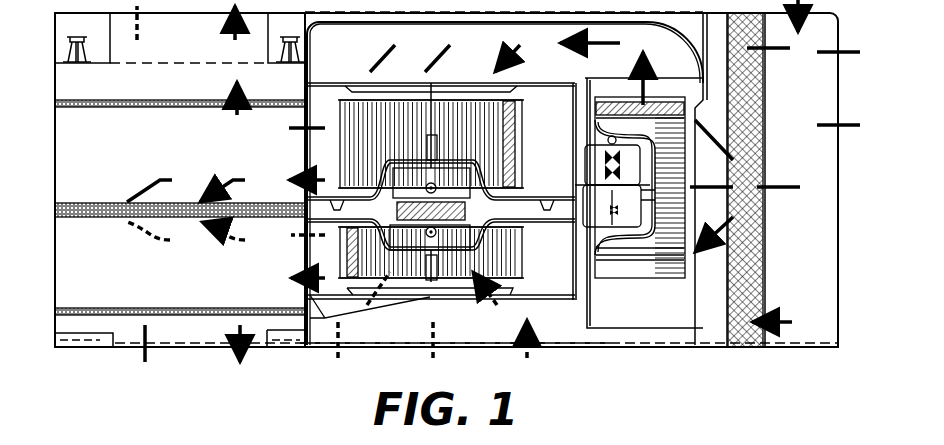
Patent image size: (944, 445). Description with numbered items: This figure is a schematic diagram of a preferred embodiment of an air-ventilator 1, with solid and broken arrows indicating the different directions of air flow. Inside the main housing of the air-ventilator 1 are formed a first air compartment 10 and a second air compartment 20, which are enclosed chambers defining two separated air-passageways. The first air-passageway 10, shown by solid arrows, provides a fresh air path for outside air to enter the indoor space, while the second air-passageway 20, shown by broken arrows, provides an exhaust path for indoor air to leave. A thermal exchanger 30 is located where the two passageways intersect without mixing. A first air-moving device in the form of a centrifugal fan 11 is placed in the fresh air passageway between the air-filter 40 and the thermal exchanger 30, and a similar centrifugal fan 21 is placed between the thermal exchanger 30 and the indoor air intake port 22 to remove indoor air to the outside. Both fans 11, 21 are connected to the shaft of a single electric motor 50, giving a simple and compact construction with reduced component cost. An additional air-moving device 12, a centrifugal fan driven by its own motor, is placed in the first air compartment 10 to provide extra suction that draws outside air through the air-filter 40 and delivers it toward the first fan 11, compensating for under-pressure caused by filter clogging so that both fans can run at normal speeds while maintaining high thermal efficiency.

The air-ventilator 1 is at (297, 398).
The first air compartment 10 is at (496, 55).
The centrifugal fan 11 is at (520, 132).
The additional air-moving device 12 is at (636, 268).
The second air compartment 20 is at (562, 323).
The centrifugal fan 21 is at (513, 256).
The indoor air intake port 22 is at (477, 355).
The thermal exchanger 30 is at (207, 161).
The air-filter 40 is at (777, 260).
The electric motor 50 is at (487, 212).